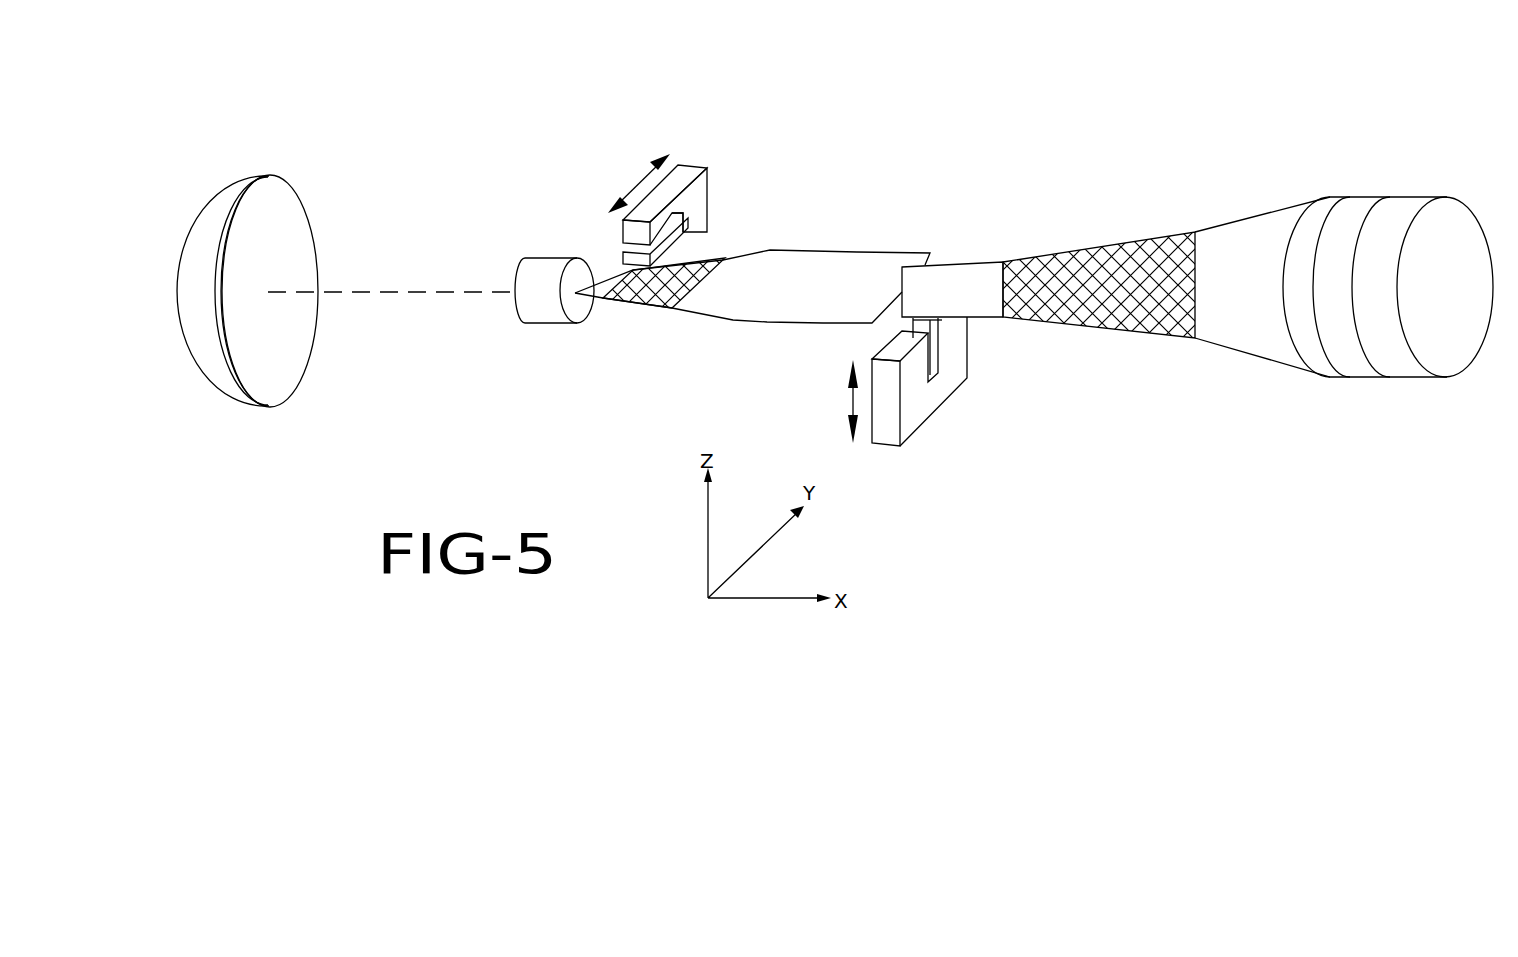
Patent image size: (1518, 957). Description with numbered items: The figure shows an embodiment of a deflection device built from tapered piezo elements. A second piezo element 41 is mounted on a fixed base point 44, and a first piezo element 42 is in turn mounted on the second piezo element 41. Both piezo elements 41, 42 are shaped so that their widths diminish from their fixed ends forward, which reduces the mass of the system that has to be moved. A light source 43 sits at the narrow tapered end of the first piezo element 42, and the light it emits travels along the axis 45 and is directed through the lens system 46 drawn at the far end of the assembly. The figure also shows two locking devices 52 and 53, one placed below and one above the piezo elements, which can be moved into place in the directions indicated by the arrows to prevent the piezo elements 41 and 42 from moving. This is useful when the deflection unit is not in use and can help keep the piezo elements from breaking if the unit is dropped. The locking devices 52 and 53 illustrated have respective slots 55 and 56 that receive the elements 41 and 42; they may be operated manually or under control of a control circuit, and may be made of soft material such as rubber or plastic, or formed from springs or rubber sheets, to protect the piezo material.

The second piezo element 41 is at (1100, 270).
The first piezo element 42 is at (648, 295).
The light source 43 is at (537, 268).
The base point 44 is at (1355, 215).
The optical axis 45 is at (400, 277).
The lens system 46 is at (203, 243).
The locking device 52 is at (912, 413).
The locking device 53 is at (680, 177).
The slot 55 is at (940, 348).
The slot 56 is at (675, 233).